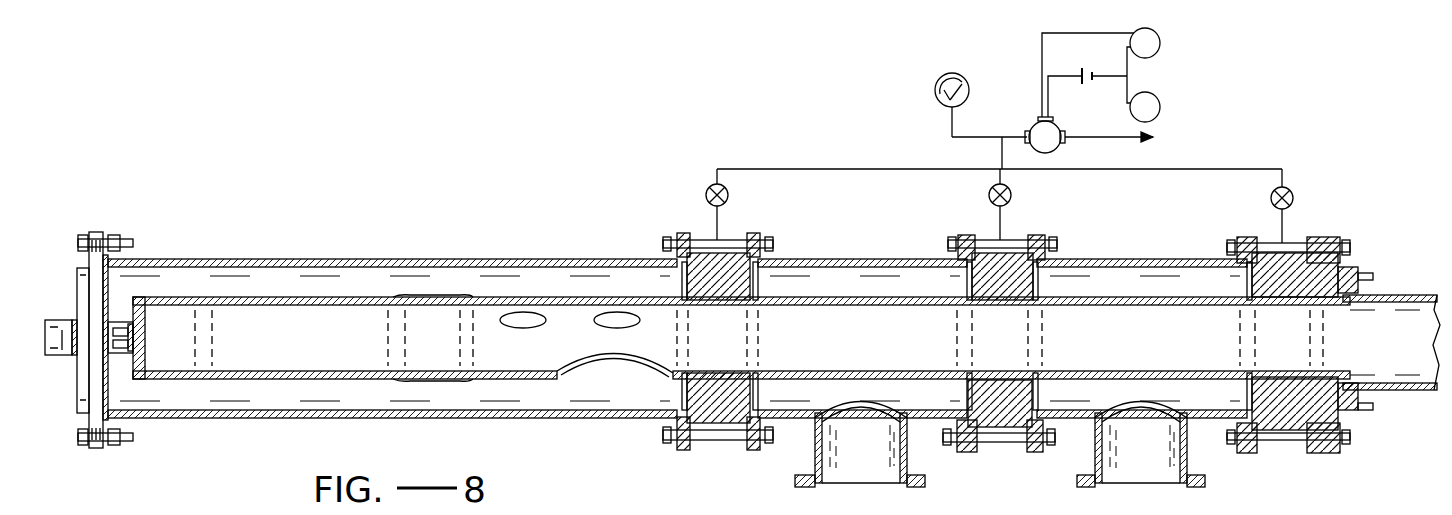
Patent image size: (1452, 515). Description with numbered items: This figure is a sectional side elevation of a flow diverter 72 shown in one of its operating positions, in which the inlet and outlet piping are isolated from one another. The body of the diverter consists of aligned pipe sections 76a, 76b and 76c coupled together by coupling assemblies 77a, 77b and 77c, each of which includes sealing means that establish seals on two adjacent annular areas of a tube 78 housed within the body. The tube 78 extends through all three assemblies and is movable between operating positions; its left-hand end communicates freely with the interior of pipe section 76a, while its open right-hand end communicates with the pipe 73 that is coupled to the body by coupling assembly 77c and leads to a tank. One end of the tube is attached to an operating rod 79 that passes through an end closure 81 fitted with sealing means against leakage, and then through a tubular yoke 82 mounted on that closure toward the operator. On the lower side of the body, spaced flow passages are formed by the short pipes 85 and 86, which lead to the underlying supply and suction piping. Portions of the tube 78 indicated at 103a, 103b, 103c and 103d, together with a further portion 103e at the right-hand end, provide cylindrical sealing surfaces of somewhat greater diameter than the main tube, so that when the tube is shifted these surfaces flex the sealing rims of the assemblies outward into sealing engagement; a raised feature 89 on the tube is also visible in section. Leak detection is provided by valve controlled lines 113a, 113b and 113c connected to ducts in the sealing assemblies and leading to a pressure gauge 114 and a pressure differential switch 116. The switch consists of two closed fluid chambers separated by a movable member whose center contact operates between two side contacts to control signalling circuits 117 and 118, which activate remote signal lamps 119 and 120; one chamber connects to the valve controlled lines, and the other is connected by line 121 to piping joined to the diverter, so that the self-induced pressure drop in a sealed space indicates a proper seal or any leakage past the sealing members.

The tubular assembly 72 is at (412, 246).
The pipe 73 is at (1402, 293).
The pipe section 76a is at (312, 259).
The pipe section 76b is at (827, 258).
The pipe section 76c is at (1117, 258).
The coupling assembly 77a is at (732, 237).
The coupling assembly 77b is at (1010, 235).
The coupling assembly 77c is at (1295, 235).
The tube 78 is at (328, 380).
The operating rod 79 is at (110, 313).
The closure 81 is at (82, 412).
The tubular yoke 82 is at (62, 320).
The outlet housing 85 is at (833, 443).
The short pipe 86 is at (1125, 447).
The dome 89 is at (618, 365).
The tube portion 103a is at (178, 346).
The tube portion 103b is at (437, 354).
The tube portion 103c is at (735, 350).
The tube portion 103d is at (1010, 350).
The inner tube section 103e is at (1303, 353).
The valve controlled line 113a is at (717, 228).
The valve controlled line 113b is at (998, 222).
The valve controlled line 113c is at (1282, 222).
The pressure gauge 114 is at (937, 78).
The pressure differential switch 116 is at (1035, 123).
The signalling circuit 117 is at (1082, 103).
The signalling circuit 118 is at (1060, 45).
The remote signal lamp 119 is at (1162, 46).
The remote signal lamp 120 is at (1160, 108).
The line 121 is at (1082, 140).